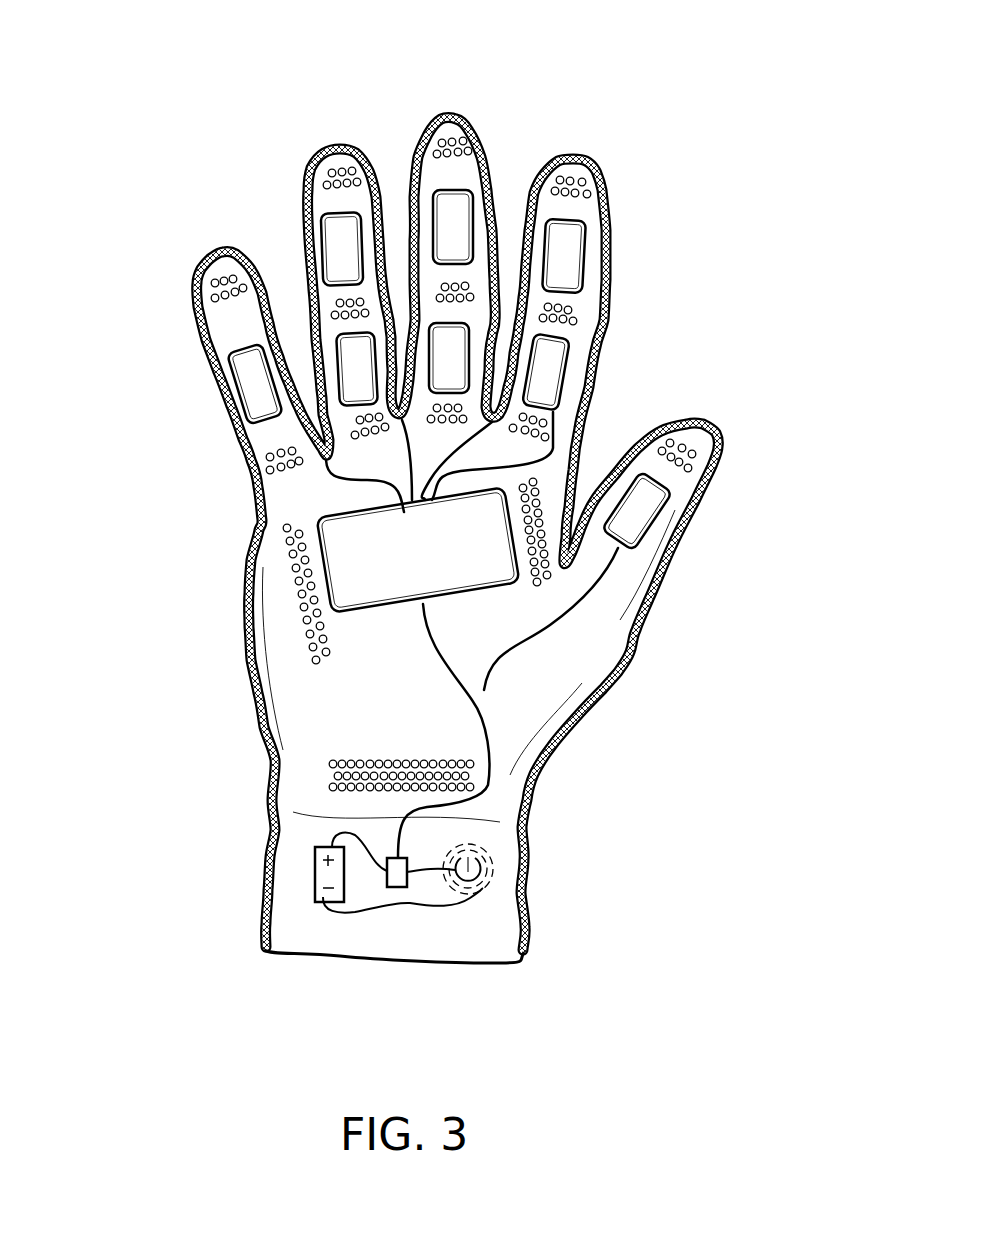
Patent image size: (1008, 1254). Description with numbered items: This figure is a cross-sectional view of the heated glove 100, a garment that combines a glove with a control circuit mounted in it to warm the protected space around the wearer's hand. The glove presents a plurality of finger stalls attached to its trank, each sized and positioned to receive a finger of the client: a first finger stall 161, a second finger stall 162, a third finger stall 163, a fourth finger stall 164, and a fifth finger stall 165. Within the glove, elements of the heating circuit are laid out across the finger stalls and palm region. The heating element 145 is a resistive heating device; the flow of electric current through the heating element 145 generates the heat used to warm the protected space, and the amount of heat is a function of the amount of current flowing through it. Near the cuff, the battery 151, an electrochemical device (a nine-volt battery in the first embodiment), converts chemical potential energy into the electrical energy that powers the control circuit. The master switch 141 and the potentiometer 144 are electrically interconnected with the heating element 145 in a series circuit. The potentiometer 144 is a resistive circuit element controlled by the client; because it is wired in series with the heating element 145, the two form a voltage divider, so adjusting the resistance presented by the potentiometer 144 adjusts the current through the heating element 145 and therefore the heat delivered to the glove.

The heated glove 100 is at (180, 80).
The fifth finger stall 165 is at (222, 250).
The fourth finger stall 164 is at (339, 147).
The third finger stall 163 is at (457, 117).
The second finger stall 162 is at (571, 158).
The first finger stall 161 is at (718, 430).
The heating element 145 is at (493, 508).
The master switch 141 is at (477, 871).
The potentiometer 144 is at (397, 887).
The battery 151 is at (323, 897).